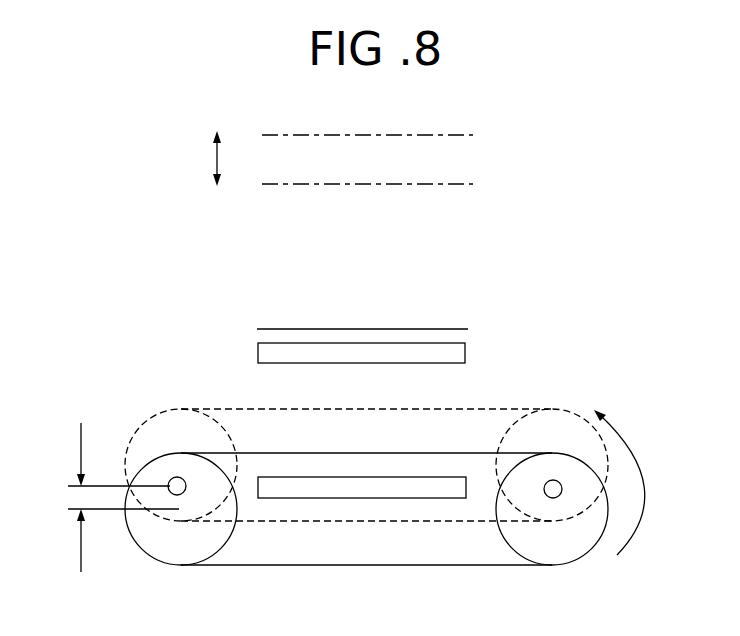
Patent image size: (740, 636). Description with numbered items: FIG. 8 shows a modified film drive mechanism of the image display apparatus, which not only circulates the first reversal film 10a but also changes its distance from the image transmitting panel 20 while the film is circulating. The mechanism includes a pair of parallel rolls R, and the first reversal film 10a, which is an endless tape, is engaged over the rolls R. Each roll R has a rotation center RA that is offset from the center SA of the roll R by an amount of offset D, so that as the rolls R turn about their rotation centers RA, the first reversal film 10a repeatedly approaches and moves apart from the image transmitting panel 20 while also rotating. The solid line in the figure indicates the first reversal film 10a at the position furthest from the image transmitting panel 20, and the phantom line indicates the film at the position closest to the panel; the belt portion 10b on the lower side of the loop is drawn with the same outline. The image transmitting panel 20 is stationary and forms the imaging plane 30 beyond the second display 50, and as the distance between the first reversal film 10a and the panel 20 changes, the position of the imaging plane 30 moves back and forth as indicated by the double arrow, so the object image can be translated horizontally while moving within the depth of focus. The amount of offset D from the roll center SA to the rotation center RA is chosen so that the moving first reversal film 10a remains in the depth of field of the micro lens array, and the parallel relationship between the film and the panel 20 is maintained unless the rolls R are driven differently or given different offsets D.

The imaging plane 30 is at (445, 136).
The second display 50 is at (287, 329).
The image transmitting panel 20 is at (462, 355).
The first reversal film 10a is at (385, 453).
The opening of conveying belt 10b is at (336, 490).
The roll R is at (148, 534).
The rotation center RA is at (176, 477).
The roll center SA is at (179, 510).
The amount of offset D is at (113, 497).